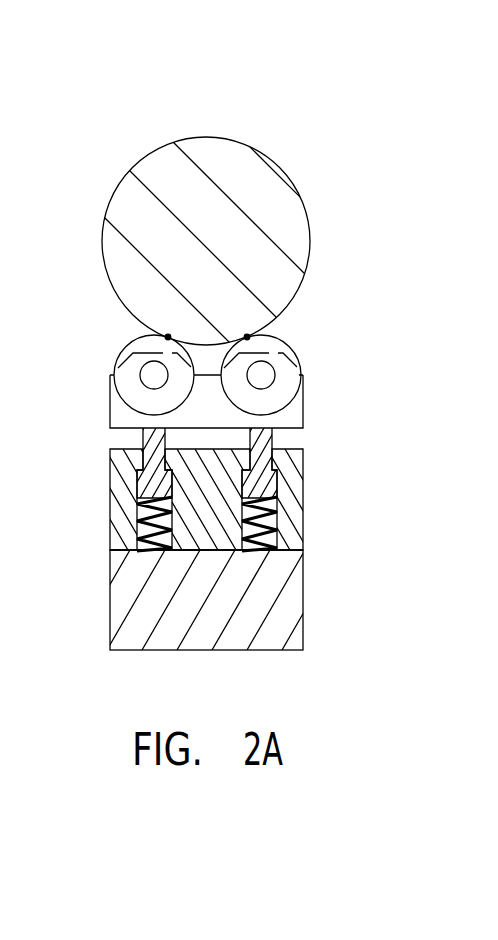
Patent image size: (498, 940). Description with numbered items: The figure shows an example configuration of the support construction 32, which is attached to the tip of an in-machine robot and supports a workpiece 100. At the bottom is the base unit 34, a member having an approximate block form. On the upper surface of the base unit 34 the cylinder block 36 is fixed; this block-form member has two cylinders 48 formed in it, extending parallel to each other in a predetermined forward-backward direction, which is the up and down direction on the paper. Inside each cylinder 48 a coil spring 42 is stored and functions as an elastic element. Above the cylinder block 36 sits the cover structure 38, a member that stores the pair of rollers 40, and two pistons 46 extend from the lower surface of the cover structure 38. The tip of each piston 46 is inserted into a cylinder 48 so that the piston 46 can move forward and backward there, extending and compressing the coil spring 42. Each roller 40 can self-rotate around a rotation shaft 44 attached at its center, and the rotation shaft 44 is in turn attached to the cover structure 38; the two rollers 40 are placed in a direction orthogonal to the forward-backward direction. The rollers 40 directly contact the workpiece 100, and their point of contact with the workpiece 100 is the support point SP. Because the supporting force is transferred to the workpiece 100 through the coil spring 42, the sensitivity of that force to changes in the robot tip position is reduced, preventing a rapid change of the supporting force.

The support construction 32 is at (168, 116).
The workpiece 100 is at (224, 150).
The support point SP is at (166, 336).
The roller 40 is at (200, 372).
The rotation shaft 44 is at (152, 377).
The cover structure 38 is at (293, 418).
The piston 46 is at (266, 443).
The cylinder block 36 is at (295, 500).
The cylinder 48 is at (140, 542).
The coil spring 42 is at (278, 540).
The base unit 34 is at (298, 615).